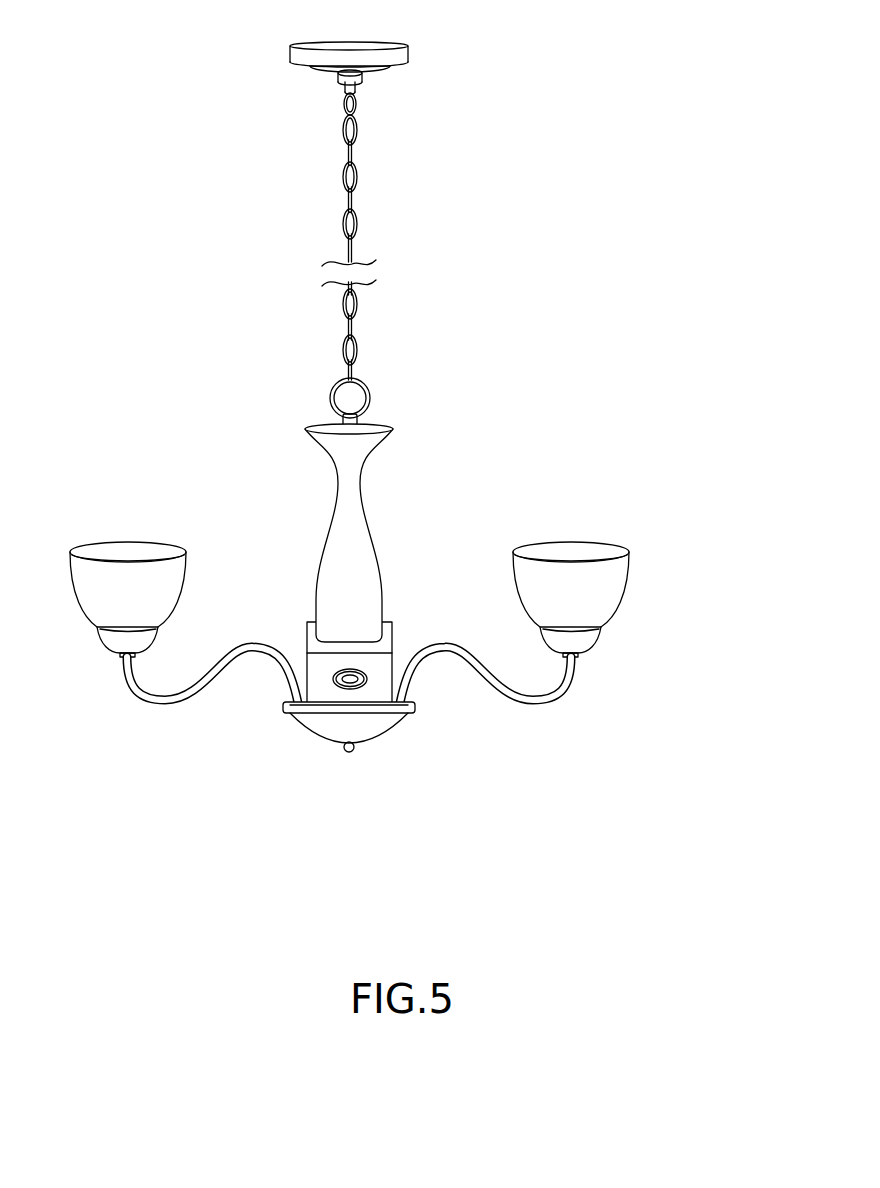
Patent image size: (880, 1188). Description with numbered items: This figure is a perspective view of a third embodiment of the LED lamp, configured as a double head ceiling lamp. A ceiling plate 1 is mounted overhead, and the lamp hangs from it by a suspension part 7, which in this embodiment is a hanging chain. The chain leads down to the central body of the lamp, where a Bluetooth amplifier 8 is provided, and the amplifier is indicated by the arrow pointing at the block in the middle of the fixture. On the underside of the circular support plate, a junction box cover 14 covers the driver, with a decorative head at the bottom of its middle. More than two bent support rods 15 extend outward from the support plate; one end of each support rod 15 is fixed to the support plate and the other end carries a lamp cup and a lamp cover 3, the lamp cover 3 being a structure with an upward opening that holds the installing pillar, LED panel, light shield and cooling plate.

The ceiling plate 1 is at (388, 55).
The suspension part 7 is at (356, 190).
The Bluetooth amplifier 8 is at (420, 602).
The lamp cover 3 is at (603, 592).
The support rod 15 is at (553, 698).
The junction box cover 14 is at (390, 728).